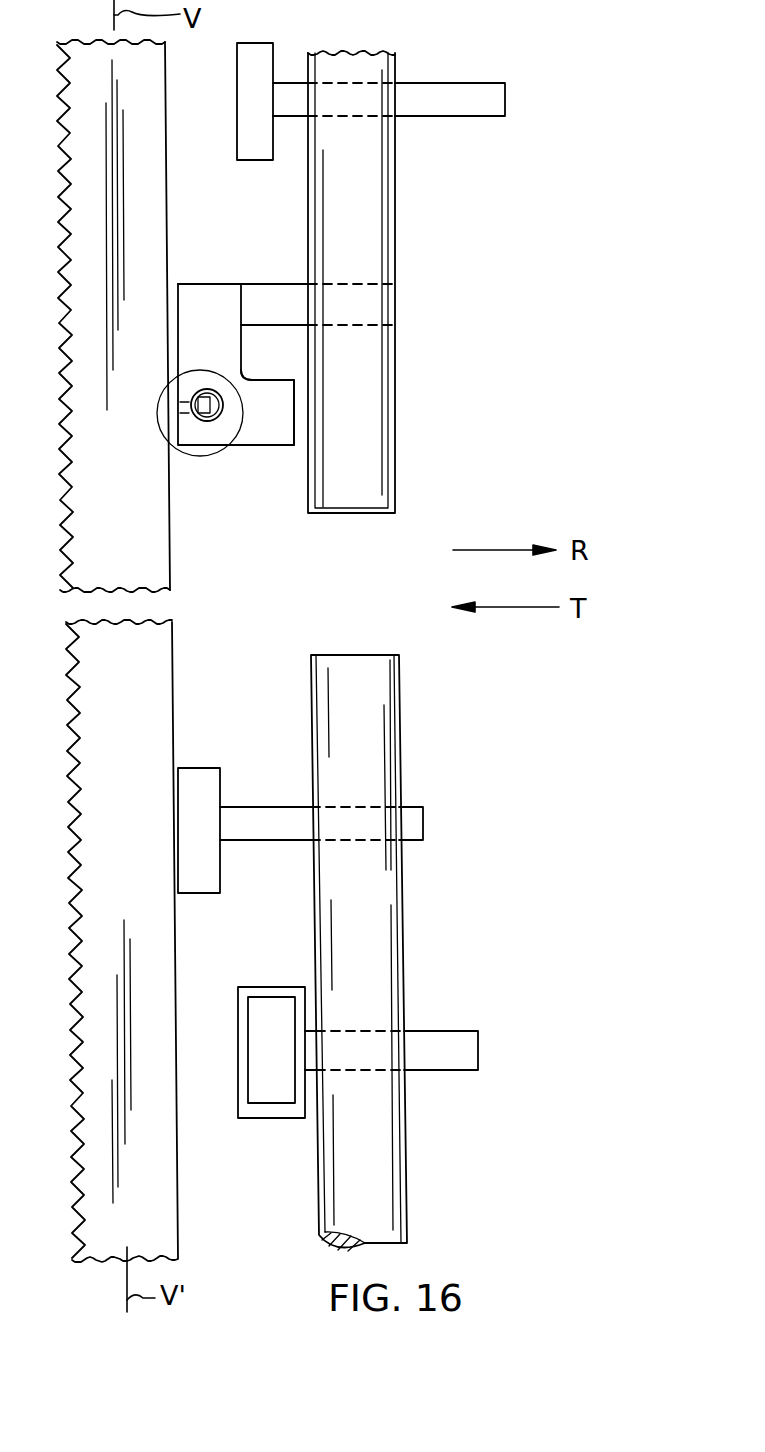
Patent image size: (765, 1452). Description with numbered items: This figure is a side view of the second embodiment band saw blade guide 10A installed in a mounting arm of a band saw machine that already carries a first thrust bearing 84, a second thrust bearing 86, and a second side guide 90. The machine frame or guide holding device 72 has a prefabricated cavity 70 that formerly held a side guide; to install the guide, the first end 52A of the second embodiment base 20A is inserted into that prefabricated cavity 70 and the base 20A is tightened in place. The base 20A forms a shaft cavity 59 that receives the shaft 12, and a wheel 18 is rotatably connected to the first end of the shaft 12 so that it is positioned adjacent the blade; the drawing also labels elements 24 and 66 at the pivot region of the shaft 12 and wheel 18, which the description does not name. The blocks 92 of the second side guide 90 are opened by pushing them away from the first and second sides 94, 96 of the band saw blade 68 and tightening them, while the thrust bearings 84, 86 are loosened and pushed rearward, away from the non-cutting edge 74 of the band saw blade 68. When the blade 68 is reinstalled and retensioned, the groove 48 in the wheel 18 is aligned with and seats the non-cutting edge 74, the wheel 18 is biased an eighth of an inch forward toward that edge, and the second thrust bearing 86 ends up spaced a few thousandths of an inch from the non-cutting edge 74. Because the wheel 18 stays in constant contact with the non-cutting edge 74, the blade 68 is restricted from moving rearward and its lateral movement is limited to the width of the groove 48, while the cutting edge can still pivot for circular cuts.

The band saw blade guide 10A is at (186, 272).
The shaft 12 is at (223, 391).
The wheel 18 is at (217, 458).
The second embodiment base 20A is at (277, 297).
The pivot pin 24 is at (212, 390).
The groove 48 is at (170, 408).
The first end of the base 52A is at (368, 311).
The shaft cavity 59 is at (226, 421).
The key 66 is at (183, 417).
The band saw blade 68 is at (170, 588).
The prefabricated cavity 70 is at (357, 117).
The guide holding device 72 is at (375, 475).
The non-cutting edge 74 is at (170, 558).
The first thrust bearing 84 is at (237, 47).
The second thrust bearing 86 is at (220, 768).
The second side guide 90 is at (263, 1118).
The blocks 92 is at (258, 1058).
The first side of the band saw blade 94 is at (128, 246).
The second side of the band saw blade 96 is at (152, 1230).